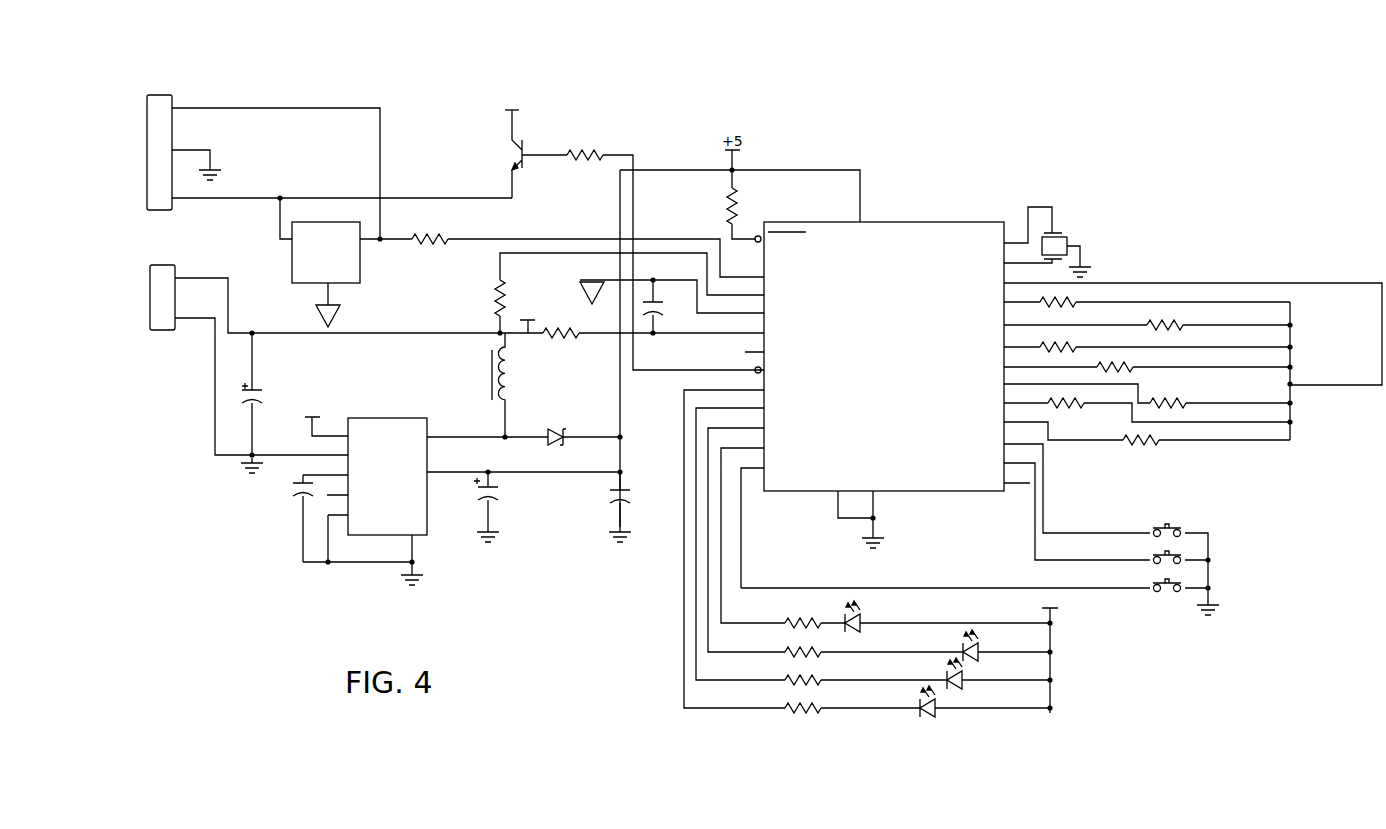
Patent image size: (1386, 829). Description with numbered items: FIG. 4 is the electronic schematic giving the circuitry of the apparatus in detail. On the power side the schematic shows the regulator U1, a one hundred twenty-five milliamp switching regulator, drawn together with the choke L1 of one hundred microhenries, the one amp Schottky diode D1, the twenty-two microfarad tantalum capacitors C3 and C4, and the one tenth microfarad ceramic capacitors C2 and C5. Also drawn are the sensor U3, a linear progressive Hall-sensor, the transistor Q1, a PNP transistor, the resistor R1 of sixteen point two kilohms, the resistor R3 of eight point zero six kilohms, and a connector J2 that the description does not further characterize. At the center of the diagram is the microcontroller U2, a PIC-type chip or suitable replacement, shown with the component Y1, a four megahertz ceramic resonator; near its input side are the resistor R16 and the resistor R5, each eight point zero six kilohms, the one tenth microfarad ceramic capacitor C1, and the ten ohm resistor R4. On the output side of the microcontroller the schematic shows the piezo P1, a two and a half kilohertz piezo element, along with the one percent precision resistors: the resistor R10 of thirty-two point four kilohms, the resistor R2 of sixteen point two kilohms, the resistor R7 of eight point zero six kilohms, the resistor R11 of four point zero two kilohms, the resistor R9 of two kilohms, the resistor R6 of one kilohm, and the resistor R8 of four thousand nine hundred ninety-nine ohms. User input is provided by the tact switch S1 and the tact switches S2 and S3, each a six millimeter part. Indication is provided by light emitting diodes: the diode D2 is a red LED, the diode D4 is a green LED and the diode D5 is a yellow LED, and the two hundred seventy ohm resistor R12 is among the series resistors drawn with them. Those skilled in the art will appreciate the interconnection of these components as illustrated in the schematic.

The connector J2 is at (140, 204).
The sensor U3 is at (335, 262).
The resistor R3 is at (572, 247).
The transistor Q1 is at (493, 145).
The resistor R1 is at (656, 253).
The resistor R16 is at (724, 213).
The resistor R5 is at (605, 293).
The capacitor C1 is at (673, 306).
The resistor R4 is at (632, 329).
The microcontroller U2 is at (887, 373).
The ceramic resonator Y1 is at (1056, 242).
The piezo P1 is at (1193, 361).
The resistor R10 is at (1147, 296).
The resistor R2 is at (1147, 319).
The resistor R7 is at (1147, 341).
The resistor R11 is at (1147, 361).
The resistor R9 is at (1147, 396).
The resistor R6 is at (1147, 413).
The resistor R8 is at (1147, 443).
The tact switch S3 is at (1129, 526).
The tact switch S2 is at (1129, 553).
The tact switch S1 is at (1076, 581).
The resistor R12 is at (845, 656).
The red LED D2 is at (947, 616).
The green LED D4 is at (957, 645).
The yellow LED D5 is at (942, 687).
The capacitor C3 is at (267, 403).
The regulator U1 is at (387, 491).
The capacitor C2 is at (280, 518).
The choke L1 is at (520, 385).
The Schottky diode D1 is at (578, 419).
The capacitor C4 is at (507, 507).
The capacitor C5 is at (643, 507).